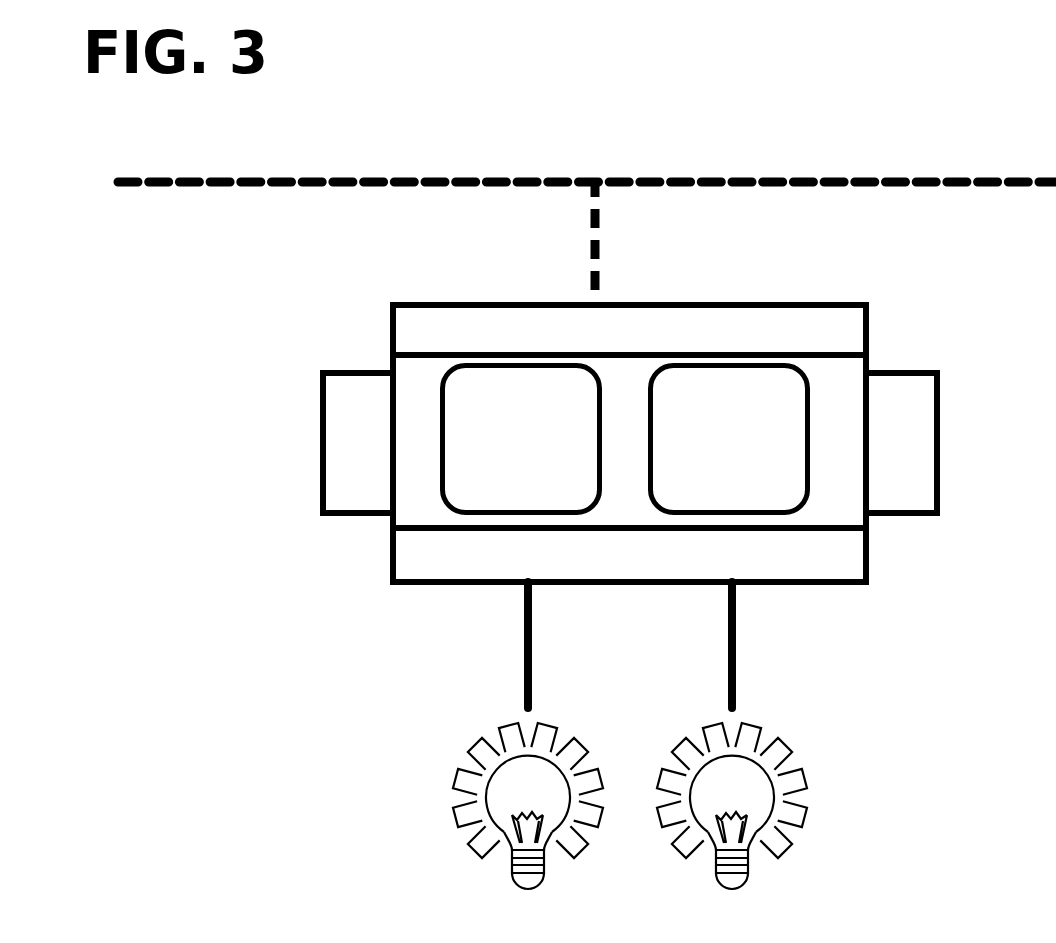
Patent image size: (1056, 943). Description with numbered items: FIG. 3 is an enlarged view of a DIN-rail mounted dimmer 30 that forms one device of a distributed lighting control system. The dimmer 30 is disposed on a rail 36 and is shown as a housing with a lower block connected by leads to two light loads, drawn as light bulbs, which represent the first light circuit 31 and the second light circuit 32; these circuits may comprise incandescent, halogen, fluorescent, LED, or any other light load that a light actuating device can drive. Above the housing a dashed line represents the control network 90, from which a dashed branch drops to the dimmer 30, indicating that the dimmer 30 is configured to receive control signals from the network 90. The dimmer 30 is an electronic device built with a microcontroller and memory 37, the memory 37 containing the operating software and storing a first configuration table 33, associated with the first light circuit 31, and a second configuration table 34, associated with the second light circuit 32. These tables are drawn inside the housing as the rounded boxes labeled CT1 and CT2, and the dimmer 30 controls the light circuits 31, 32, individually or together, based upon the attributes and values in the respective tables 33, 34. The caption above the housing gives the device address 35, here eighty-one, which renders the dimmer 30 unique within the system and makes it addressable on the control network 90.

The DIN-rail mounted dimmer 30 is at (410, 343).
The first light circuit 31 is at (448, 760).
The second light circuit 32 is at (807, 740).
The first configuration table 33 is at (463, 402).
The second configuration table 34 is at (793, 482).
The device address 35 is at (947, 279).
The rail 36 is at (923, 425).
The memory 37 is at (410, 450).
The control network 90 is at (878, 175).